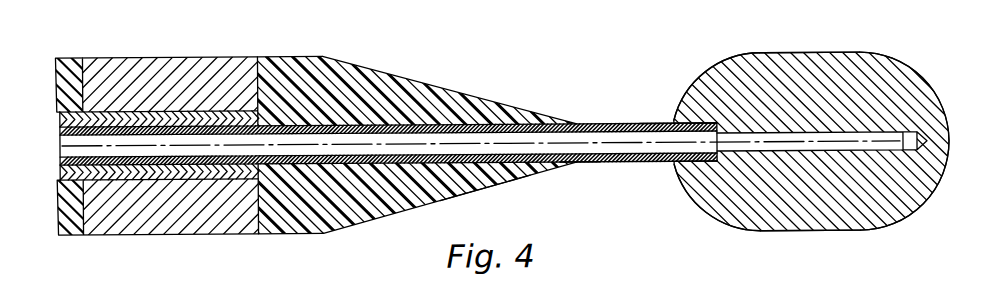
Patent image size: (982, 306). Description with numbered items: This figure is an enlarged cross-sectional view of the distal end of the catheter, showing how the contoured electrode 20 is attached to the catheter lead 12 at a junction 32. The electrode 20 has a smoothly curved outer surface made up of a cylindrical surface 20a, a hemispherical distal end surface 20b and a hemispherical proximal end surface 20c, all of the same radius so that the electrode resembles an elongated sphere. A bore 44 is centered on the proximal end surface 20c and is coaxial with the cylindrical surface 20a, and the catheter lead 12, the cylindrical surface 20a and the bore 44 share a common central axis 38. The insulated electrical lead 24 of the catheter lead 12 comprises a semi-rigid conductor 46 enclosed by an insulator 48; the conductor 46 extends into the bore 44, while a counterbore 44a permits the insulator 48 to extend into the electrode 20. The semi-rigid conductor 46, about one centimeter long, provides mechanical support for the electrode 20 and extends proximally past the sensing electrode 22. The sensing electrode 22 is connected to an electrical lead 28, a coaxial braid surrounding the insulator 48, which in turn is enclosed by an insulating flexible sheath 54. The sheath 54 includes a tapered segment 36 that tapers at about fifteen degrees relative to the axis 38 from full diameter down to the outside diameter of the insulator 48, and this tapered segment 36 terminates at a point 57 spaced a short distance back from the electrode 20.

The catheter lead 12 is at (343, 236).
The contoured electrode 20 is at (736, 160).
The cylindrical surface 20a is at (843, 236).
The hemispherical distal end surface 20b is at (938, 105).
The hemispherical proximal end surface 20c is at (685, 194).
The proximal sensing electrode 22 is at (203, 58).
The insulated electrical lead 24 is at (605, 126).
The electrical lead 28 is at (200, 181).
The junction 32 is at (667, 126).
The tapered segment 36 is at (466, 96).
The central axis 38 is at (597, 147).
The bore 44 is at (793, 135).
The counterbore 44a is at (690, 131).
The semi-rigid conductor 46 is at (537, 175).
The insulator 48 is at (486, 191).
The flexible sheath 54 is at (411, 154).
The point 57 is at (581, 169).